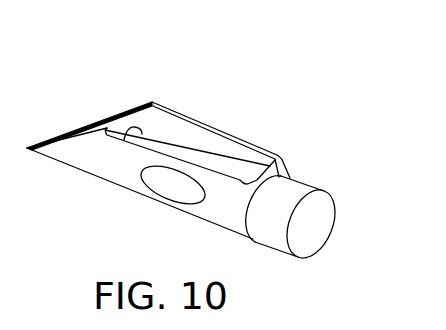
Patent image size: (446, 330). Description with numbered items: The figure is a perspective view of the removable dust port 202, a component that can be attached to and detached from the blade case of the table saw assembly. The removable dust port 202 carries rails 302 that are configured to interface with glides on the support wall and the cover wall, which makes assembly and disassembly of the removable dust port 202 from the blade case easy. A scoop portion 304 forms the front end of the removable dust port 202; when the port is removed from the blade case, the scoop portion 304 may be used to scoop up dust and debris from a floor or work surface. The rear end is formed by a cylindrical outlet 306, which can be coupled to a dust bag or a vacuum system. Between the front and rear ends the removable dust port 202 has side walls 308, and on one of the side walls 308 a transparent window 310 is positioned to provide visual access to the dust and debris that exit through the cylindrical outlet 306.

The removable dust port 202 is at (254, 101).
The rails 302 is at (172, 110).
The scoop portion 304 is at (80, 126).
The cylindrical outlet 306 is at (295, 220).
The side walls 308 is at (227, 215).
The transparent window 310 is at (150, 196).